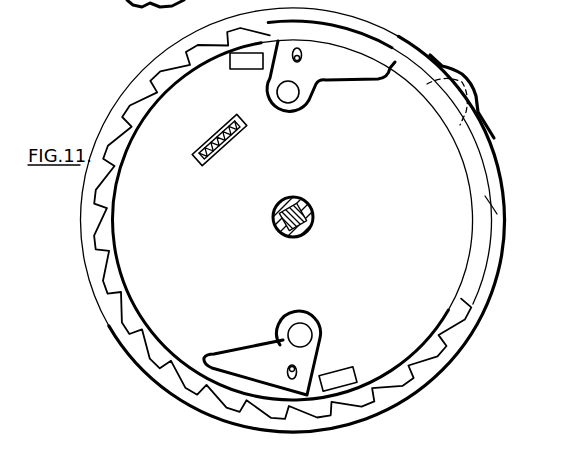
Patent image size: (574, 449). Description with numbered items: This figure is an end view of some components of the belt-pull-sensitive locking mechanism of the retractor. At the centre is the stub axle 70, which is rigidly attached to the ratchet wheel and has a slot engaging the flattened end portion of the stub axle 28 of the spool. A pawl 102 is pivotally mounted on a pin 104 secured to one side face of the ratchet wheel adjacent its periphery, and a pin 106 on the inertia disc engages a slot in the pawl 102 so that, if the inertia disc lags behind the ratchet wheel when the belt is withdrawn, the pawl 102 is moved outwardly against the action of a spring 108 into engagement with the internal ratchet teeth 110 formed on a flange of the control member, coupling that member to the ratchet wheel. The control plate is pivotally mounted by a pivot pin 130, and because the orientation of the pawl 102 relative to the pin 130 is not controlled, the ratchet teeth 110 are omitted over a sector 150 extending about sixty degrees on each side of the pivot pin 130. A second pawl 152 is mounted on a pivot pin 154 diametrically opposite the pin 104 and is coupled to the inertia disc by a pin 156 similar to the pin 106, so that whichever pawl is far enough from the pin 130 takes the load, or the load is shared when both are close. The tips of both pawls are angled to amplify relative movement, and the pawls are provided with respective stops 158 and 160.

The stub axle 28 is at (284, 237).
The stub axle 70 is at (298, 197).
The pawl 102 is at (353, 70).
The pin 104 is at (291, 97).
The pin 106 is at (299, 56).
The spring 108 is at (226, 156).
The internal ratchet teeth 110 is at (477, 155).
The pivot pin 130 is at (470, 78).
The sector 150 is at (494, 214).
The second pawl 152 is at (235, 358).
The pivot pin 154 is at (305, 328).
The pin 156 is at (297, 365).
The stop 158 is at (233, 72).
The stop 160 is at (357, 367).